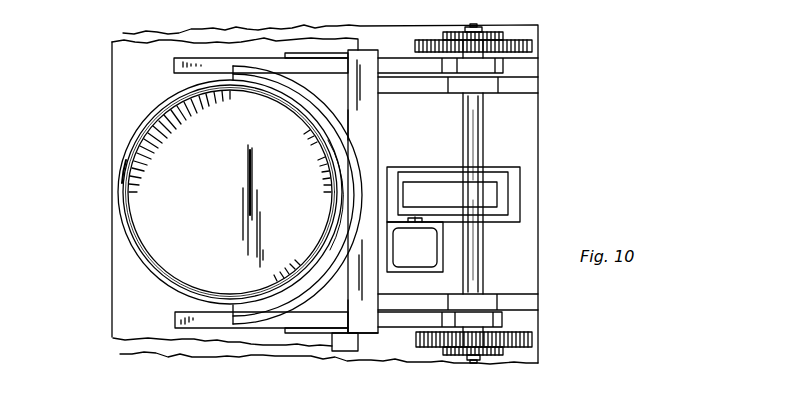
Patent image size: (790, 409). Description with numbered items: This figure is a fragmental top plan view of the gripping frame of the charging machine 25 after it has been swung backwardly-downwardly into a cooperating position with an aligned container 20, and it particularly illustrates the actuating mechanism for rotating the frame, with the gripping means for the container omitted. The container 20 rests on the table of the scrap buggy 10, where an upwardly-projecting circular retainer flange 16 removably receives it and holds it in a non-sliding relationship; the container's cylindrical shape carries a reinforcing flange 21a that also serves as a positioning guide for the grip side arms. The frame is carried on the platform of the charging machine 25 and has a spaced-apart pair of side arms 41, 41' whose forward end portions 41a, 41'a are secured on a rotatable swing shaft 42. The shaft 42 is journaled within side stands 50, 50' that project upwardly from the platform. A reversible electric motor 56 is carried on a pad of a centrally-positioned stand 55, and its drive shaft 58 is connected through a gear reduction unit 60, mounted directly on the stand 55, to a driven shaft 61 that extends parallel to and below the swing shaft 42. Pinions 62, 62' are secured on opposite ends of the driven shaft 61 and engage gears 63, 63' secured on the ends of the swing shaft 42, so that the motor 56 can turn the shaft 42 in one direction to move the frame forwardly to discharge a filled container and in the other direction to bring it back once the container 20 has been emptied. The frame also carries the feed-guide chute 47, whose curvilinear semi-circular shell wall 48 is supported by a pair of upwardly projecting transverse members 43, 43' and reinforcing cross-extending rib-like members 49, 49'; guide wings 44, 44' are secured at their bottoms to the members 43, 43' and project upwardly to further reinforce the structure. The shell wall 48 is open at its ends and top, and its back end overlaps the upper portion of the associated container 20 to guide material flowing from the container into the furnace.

The scrap buggy 10 is at (110, 135).
The retainer flange 16 is at (133, 245).
The container 20 is at (147, 241).
The flange 21a is at (128, 178).
The charging machine 25 is at (411, 366).
The side arm 41 is at (244, 318).
The side arm 41' is at (241, 69).
The forward end portion 41a is at (502, 320).
The forward end portion 41'a is at (490, 74).
The swing shaft 42 is at (483, 125).
The transverse member 43 is at (366, 347).
The transverse member 43' is at (377, 184).
The guide wing 44 is at (321, 361).
The guide wing 44' is at (316, 46).
The feed-guide chute 47 is at (317, 115).
The shell wall 48 is at (335, 152).
The rib-like member 49 is at (297, 195).
The rib-like member 49' is at (383, 125).
The side stand 50 is at (482, 300).
The side stand 50' is at (485, 94).
The central stand 55 is at (520, 204).
The reversible electric motor 56 is at (428, 262).
The drive shaft 58 is at (426, 253).
The gear reduction unit 60 is at (497, 187).
The driven shaft 61 is at (483, 29).
The pinion 62 is at (515, 364).
The pinion 62' is at (518, 40).
The gear 63 is at (501, 344).
The gear 63' is at (504, 54).